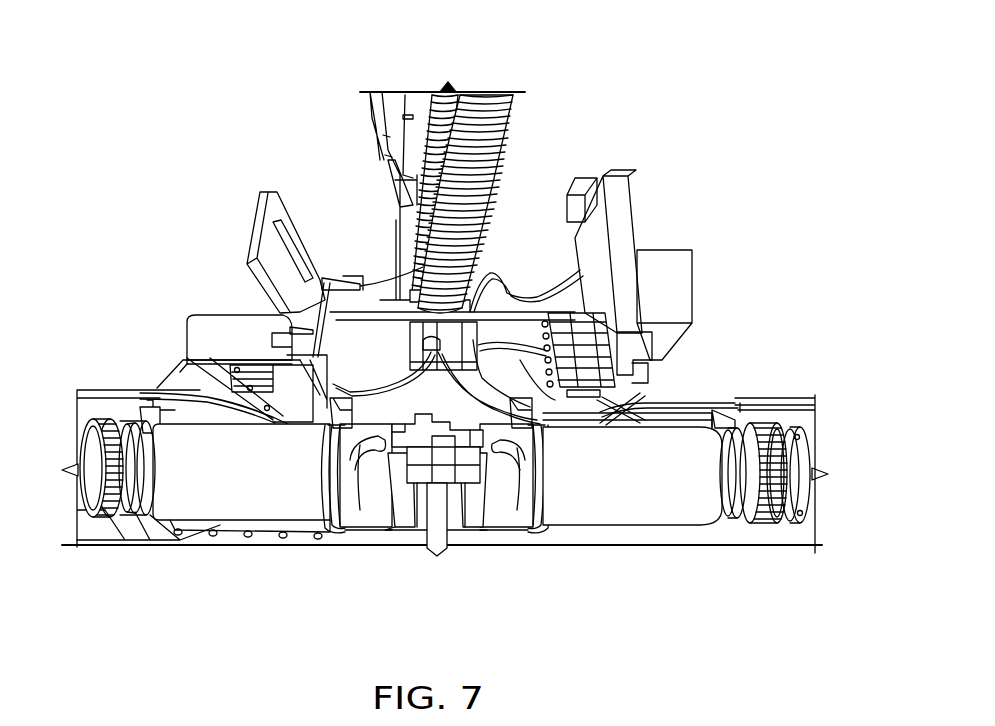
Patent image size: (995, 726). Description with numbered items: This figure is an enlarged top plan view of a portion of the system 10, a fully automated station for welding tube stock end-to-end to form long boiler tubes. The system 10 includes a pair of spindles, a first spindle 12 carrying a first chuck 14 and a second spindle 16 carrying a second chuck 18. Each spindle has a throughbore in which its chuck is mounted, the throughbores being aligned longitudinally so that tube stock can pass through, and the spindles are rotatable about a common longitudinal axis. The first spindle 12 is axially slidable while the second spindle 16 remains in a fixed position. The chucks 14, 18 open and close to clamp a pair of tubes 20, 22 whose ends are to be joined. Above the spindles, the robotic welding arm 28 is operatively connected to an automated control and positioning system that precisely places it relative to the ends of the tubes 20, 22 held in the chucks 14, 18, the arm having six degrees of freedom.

The system 10 is at (645, 46).
The first spindle 12 is at (238, 510).
The first chuck 14 is at (367, 508).
The second spindle 16 is at (634, 505).
The second chuck 18 is at (507, 508).
The tube 20 is at (425, 540).
The tube 22 is at (446, 540).
The robotic welding arm 28 is at (402, 110).